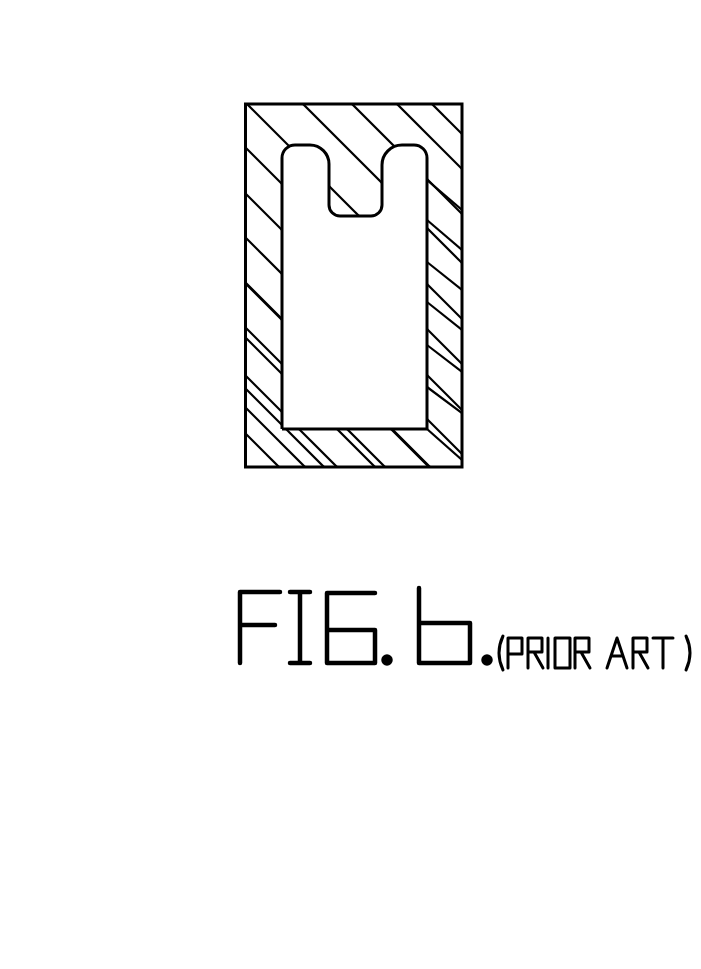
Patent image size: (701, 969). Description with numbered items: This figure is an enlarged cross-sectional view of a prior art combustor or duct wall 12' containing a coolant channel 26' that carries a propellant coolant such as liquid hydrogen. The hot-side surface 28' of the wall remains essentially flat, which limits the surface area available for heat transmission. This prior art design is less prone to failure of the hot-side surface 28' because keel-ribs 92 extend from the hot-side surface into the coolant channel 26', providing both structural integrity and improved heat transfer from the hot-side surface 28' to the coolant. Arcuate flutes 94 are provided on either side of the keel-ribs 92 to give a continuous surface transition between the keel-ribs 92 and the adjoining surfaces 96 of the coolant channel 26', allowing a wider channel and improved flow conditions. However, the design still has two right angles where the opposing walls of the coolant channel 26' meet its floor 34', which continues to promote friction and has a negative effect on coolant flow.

The hot-side surface 28' is at (350, 247).
The arcuate flutes 94 is at (305, 161).
The adjoining surfaces 96 is at (284, 189).
The keel-ribs 92 is at (358, 188).
The combustor or duct wall 12' is at (498, 293).
The coolant channel 26' is at (427, 287).
The floor 34' is at (420, 393).